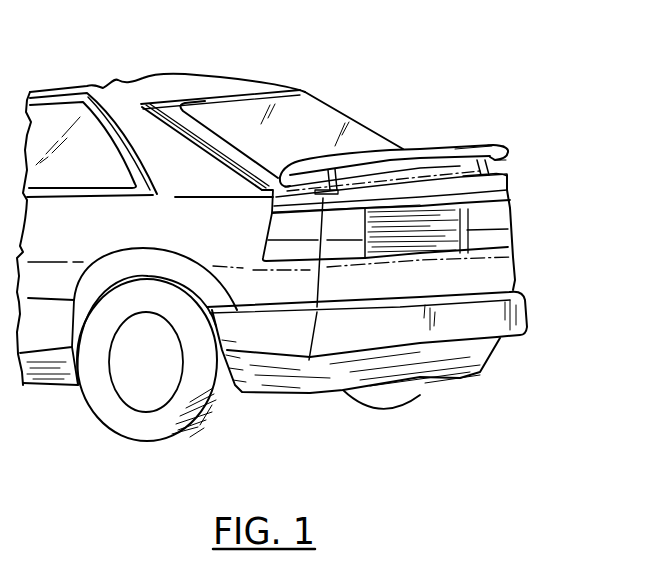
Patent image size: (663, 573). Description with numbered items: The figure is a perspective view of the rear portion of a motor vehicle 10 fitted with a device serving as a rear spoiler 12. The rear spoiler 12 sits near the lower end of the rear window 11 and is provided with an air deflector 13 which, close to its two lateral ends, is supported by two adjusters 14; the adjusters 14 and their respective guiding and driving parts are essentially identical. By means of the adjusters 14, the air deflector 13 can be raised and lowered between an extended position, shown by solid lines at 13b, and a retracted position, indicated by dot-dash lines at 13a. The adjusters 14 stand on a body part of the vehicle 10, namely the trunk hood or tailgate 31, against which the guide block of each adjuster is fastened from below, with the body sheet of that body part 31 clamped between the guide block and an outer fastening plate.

The motor vehicle 10 is at (110, 75).
The rear window 11 is at (320, 115).
The rear spoiler 12 is at (402, 136).
The air deflector 13 is at (457, 147).
The retracted position 13a is at (507, 168).
The extended position 13b is at (493, 145).
The adjusters 14 is at (328, 173).
The trunk hood or tailgate 31 is at (467, 190).